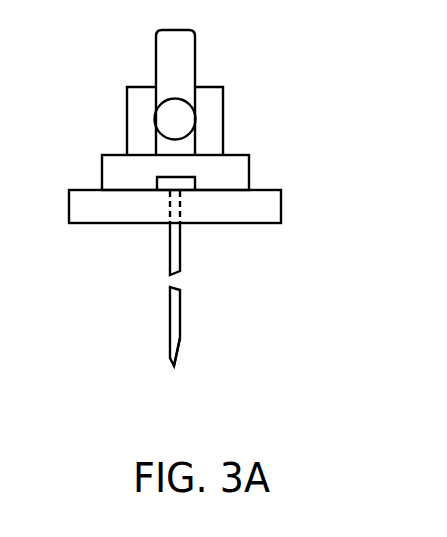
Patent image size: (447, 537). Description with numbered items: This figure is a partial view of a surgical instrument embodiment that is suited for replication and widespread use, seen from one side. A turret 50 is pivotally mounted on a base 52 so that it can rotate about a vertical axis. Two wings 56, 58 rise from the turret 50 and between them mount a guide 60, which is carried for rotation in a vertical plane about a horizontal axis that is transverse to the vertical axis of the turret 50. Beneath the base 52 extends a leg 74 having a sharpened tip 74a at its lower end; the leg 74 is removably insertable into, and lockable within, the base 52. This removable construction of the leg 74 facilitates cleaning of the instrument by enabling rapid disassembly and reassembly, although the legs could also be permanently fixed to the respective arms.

The turret 50 is at (250, 165).
The base 52 is at (282, 210).
The wing 56 is at (224, 106).
The wing 58 is at (125, 108).
The guide 60 is at (196, 52).
The leg 74 is at (181, 263).
The sharpened tip 74a is at (176, 366).